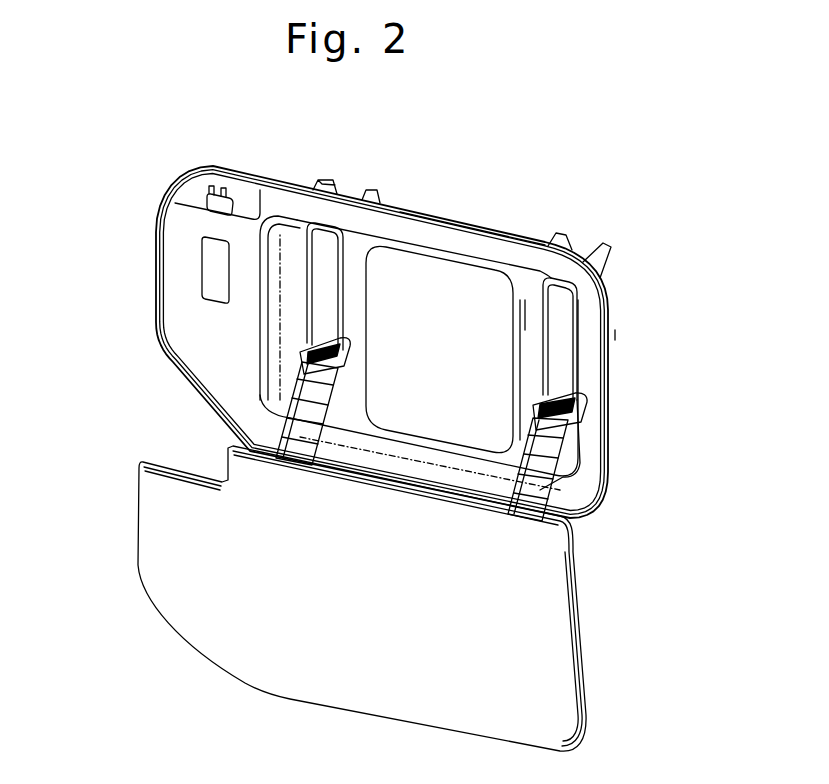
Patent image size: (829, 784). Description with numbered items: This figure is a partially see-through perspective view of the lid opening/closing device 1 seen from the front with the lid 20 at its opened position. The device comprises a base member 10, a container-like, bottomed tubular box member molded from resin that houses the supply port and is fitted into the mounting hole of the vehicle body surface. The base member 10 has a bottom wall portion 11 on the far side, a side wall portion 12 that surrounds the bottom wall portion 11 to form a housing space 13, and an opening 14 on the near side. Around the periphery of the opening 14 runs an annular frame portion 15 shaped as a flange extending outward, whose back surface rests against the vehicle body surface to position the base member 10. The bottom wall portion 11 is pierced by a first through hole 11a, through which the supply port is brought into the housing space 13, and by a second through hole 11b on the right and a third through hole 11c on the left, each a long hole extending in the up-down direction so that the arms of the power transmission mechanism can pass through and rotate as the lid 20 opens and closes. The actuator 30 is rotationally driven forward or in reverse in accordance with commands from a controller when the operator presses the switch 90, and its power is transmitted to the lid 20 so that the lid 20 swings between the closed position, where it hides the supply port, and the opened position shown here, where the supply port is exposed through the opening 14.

The lid opening/closing device 1 is at (623, 328).
The base member 10 is at (156, 335).
The bottom wall portion 11 is at (525, 290).
The first through hole 11a is at (377, 298).
The second through hole 11b is at (538, 372).
The third through hole 11c is at (325, 308).
The side wall portion 12 is at (277, 258).
The housing space 13 is at (520, 333).
The opening 14 is at (462, 280).
The frame portion 15 is at (187, 235).
The lid 20 is at (540, 647).
The actuator 30 is at (584, 448).
The switch 90 is at (193, 203).